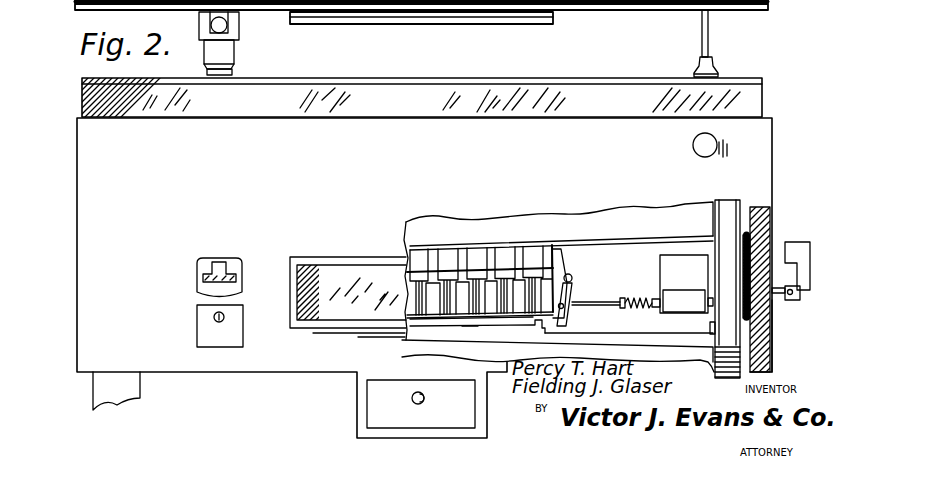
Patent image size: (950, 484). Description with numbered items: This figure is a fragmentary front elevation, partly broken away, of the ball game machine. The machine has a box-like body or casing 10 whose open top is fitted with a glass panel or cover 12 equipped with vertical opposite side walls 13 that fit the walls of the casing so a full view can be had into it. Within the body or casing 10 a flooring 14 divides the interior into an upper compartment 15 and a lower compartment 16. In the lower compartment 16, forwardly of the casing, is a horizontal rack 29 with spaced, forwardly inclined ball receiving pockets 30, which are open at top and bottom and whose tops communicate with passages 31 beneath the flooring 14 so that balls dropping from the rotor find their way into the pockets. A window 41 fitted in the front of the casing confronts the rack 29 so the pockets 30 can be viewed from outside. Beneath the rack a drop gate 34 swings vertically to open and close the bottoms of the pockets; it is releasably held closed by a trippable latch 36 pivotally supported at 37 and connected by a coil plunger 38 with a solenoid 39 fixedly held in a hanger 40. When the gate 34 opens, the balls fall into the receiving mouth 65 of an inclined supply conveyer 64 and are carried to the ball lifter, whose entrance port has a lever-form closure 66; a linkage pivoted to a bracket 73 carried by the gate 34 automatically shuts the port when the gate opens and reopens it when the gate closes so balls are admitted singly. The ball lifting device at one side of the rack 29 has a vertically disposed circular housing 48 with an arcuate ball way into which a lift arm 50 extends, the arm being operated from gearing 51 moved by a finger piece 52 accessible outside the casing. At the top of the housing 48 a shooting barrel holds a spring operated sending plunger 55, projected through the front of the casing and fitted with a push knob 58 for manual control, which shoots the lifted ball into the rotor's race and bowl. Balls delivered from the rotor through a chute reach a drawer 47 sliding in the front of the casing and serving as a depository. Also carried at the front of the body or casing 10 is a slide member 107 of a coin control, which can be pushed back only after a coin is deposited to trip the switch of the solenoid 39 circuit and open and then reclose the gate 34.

The body or casing 10 is at (80, 184).
The glass panel or cover 12 is at (445, 78).
The vertical opposite side walls 13 is at (767, 105).
The flooring 14 is at (485, 243).
The upper compartment 15 is at (561, 231).
The lower compartment 16 is at (629, 329).
The horizontal rack 29 is at (541, 285).
The ball receiving pockets 30 is at (407, 290).
The passages 31 is at (447, 258).
The drop gate 34 is at (433, 315).
The latch 36 is at (550, 262).
The pivot 37 is at (571, 276).
The coil plunger 38 is at (603, 306).
The solenoid 39 is at (678, 294).
The hanger 40 is at (658, 272).
The window 41 is at (317, 275).
The drawer 47 is at (380, 403).
The circular housing 48 is at (728, 218).
The lift arm 50 is at (795, 336).
The gearing 51 is at (750, 228).
The finger piece 52 is at (804, 252).
The sending plunger 55 is at (709, 29).
The push knob 58 is at (700, 62).
The supply conveyer 64 is at (637, 340).
The receiving mouth or end 65 is at (470, 330).
The closure 66 is at (712, 330).
The bracket 73 is at (533, 328).
The slide member 107 is at (223, 50).